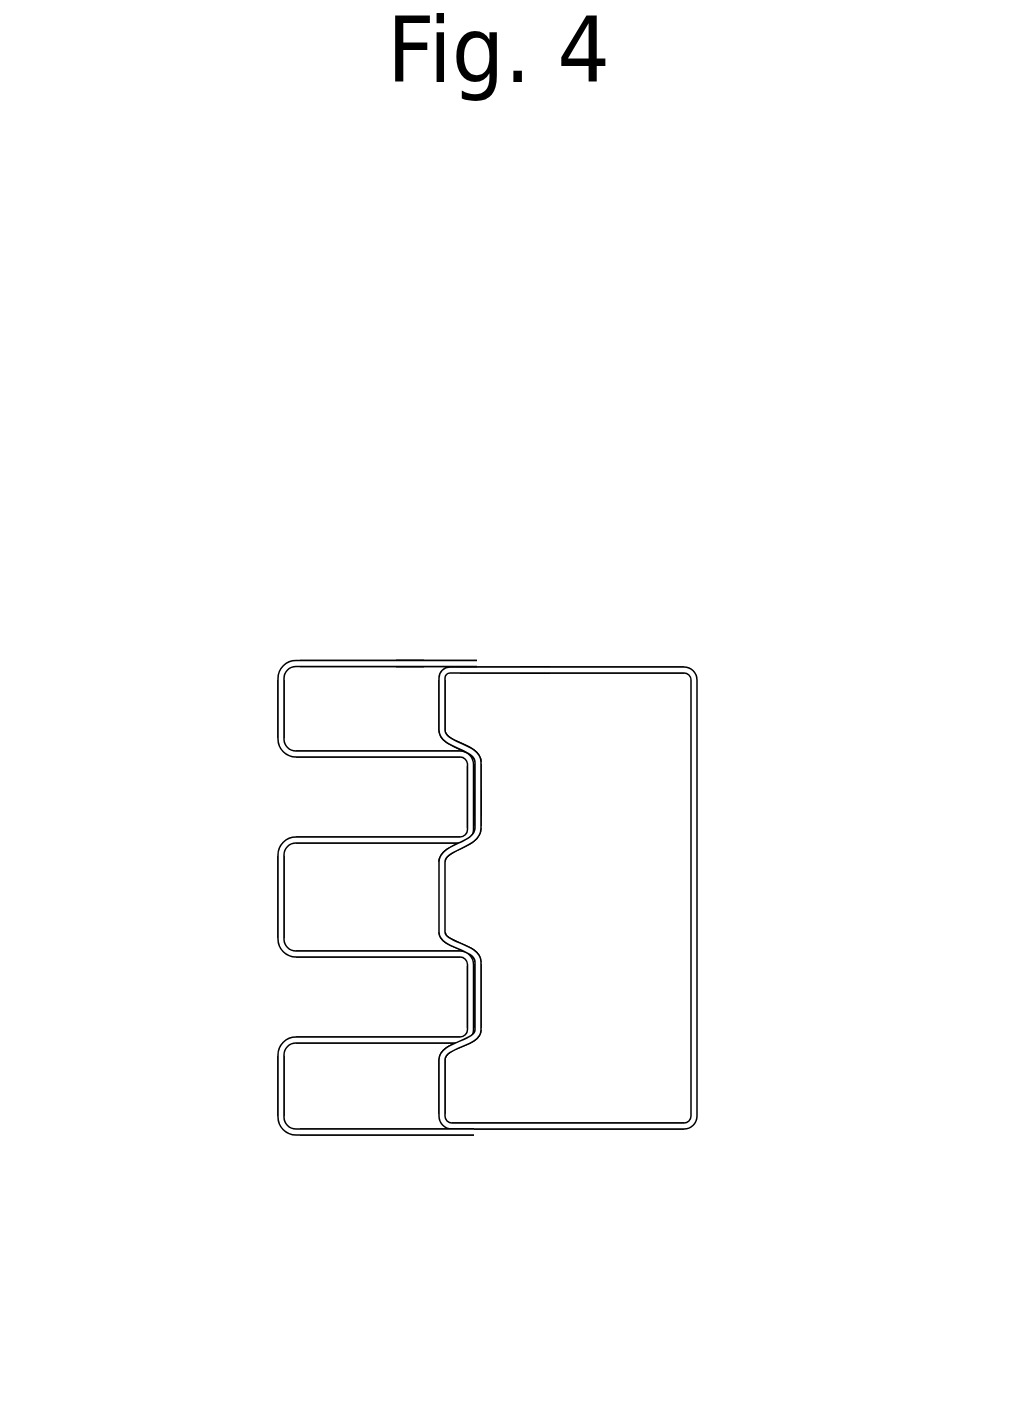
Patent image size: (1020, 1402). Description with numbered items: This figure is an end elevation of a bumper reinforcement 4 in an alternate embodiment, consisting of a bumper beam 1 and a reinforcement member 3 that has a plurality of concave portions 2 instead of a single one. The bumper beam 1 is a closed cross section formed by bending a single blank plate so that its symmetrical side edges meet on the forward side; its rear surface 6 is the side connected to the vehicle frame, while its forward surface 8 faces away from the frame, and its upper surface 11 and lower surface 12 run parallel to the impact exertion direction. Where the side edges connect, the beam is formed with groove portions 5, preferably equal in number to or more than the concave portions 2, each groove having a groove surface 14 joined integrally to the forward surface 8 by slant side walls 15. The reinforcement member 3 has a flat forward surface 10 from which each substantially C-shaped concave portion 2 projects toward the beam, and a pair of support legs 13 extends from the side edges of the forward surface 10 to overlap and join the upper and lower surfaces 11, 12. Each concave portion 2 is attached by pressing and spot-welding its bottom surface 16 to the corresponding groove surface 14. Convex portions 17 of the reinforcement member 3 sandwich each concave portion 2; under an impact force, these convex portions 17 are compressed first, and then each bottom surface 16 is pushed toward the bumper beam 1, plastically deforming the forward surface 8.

The bumper beam 1 is at (535, 648).
The concave portion 2 is at (417, 817).
The reinforcement member 3 is at (410, 640).
The bumper reinforcement 4 is at (580, 514).
The groove portion 5 is at (507, 803).
The rear surface 6 is at (697, 1072).
The forward surface 8 is at (437, 695).
The forward surface 10 is at (277, 705).
The upper surface 11 is at (638, 668).
The lower surface 12 is at (600, 1130).
The support legs 13 is at (350, 657).
The groove surface 14 is at (483, 787).
The slant side walls 15 is at (467, 747).
The bottom surface 16 is at (467, 787).
The convex portions 17 is at (417, 729).